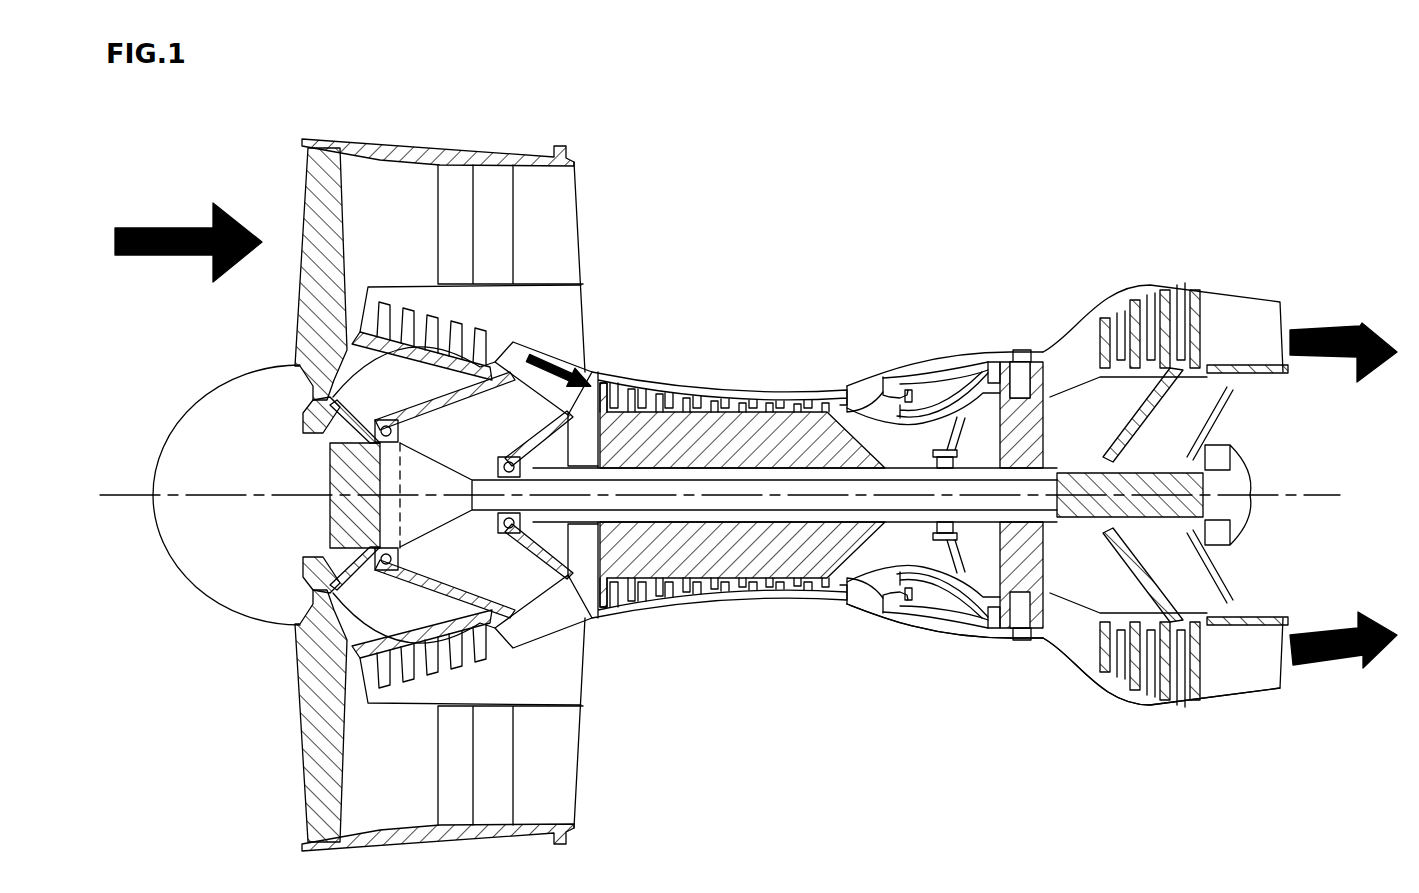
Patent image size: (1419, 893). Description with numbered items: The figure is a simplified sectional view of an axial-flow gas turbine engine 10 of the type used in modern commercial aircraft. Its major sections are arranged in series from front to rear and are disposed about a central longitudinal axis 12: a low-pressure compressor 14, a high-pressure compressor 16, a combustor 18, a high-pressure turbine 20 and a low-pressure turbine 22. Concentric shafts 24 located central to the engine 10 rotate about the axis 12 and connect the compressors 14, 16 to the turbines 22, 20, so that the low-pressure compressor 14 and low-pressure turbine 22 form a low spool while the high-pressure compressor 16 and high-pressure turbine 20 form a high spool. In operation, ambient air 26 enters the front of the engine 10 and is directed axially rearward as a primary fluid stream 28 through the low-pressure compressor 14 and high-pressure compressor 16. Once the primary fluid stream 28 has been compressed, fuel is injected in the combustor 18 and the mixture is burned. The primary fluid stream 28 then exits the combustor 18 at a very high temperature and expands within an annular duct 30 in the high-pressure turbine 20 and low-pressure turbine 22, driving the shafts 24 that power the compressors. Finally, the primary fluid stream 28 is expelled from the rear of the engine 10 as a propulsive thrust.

The gas turbine engine 10 is at (1058, 178).
The central longitudinal axis 12 is at (135, 488).
The low-pressure compressor 14 is at (515, 135).
The high-pressure compressor 16 is at (710, 345).
The combustor 18 is at (915, 345).
The high-pressure turbine 20 is at (1030, 338).
The low-pressure turbine 22 is at (1193, 270).
The concentric shafts 24 is at (553, 463).
The ambient air 26 is at (165, 228).
The primary fluid stream 28 is at (557, 357).
The annular duct 30 is at (1213, 690).